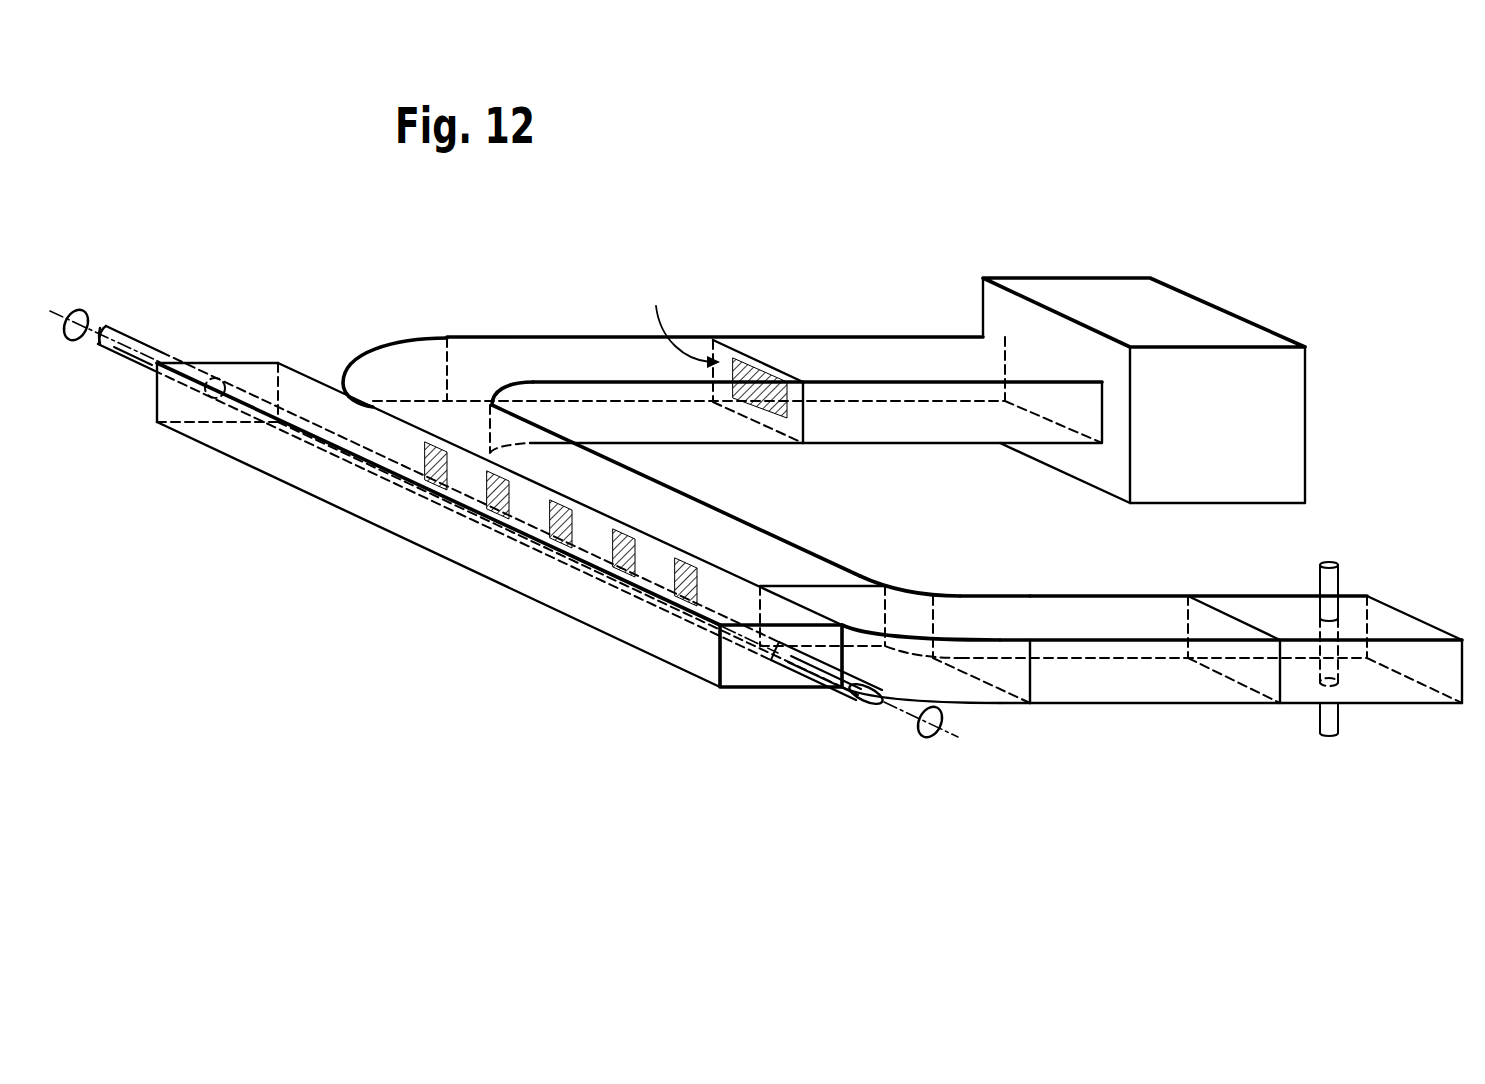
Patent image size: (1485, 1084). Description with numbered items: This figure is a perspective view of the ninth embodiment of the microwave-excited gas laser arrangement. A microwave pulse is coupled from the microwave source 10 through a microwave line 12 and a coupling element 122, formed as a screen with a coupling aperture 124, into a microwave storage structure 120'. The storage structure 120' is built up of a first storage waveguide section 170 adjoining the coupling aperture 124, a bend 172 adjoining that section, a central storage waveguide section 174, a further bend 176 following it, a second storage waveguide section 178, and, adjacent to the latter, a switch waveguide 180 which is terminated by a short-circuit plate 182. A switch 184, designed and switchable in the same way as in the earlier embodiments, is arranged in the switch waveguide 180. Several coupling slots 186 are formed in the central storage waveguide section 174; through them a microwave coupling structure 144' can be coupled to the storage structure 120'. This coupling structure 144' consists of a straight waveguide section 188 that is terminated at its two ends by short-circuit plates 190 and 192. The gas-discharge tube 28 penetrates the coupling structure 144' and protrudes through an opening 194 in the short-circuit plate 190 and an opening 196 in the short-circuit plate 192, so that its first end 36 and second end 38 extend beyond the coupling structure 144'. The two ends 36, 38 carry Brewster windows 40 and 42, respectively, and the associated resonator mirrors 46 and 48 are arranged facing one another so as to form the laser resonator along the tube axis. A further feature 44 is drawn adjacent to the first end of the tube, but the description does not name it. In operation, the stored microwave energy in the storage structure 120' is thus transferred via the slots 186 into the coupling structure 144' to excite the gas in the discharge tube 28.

The microwave source 10 is at (1090, 293).
The microwave line 12 is at (934, 352).
The gas-discharge tube 28 is at (827, 688).
The first end 36 is at (847, 695).
The second end 38 is at (124, 339).
The Brewster window 40 is at (865, 701).
The Brewster window 42 is at (102, 346).
The bore 44 is at (796, 672).
The resonator mirror 46 is at (933, 731).
The resonator mirror 48 is at (78, 310).
The microwave storage structure 120' is at (676, 490).
The coupling element 122 is at (676, 321).
The coupling aperture 124 is at (745, 362).
The microwave coupling structure 144' is at (438, 554).
The first storage waveguide section 170 is at (576, 356).
The bend 172 is at (392, 357).
The central storage waveguide section 174 is at (823, 565).
The bend 176 is at (972, 693).
The second storage waveguide section 178 is at (1107, 685).
The switch waveguide 180 is at (1395, 694).
The short-circuit plate 182 is at (1397, 630).
The switch 184 is at (1318, 577).
The coupling slots 186 is at (492, 516).
The waveguide section 188 is at (333, 494).
The short-circuit plate 190 is at (735, 667).
The short-circuit plate 192 is at (157, 405).
The opening 194 is at (783, 645).
The opening 196 is at (218, 378).